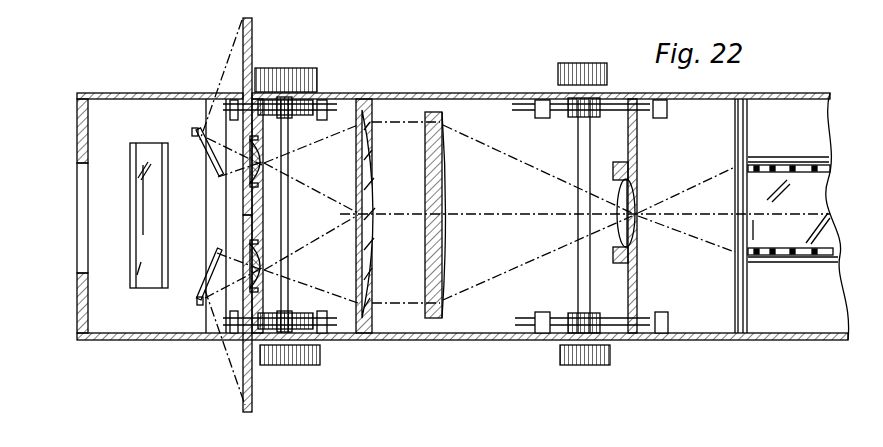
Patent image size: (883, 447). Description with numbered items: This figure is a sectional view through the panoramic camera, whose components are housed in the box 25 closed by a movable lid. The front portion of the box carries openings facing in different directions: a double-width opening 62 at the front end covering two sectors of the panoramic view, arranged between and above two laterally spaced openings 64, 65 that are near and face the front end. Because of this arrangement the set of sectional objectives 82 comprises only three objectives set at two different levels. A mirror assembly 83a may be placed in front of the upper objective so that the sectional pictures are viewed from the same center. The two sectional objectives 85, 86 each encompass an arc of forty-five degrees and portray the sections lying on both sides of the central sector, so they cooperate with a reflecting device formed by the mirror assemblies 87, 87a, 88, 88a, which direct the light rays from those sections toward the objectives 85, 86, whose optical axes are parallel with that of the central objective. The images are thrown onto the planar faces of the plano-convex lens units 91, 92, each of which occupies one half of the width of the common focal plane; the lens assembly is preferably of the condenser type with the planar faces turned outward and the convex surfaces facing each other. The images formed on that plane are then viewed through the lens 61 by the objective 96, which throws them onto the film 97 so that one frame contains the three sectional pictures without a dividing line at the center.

The box 25 is at (110, 340).
The opening 62 is at (82, 223).
The mirror assembly 83a is at (149, 288).
The mirror assembly 88 is at (197, 131).
The mirror assembly 87 is at (200, 298).
The mirror assembly 88a is at (243, 47).
The mirror assembly 87a is at (245, 373).
The opening 64 is at (227, 95).
The opening 65 is at (227, 340).
The set of sectional objectives 82 is at (270, 218).
The sectional objective 86 is at (264, 165).
The sectional objective 85 is at (264, 268).
The plano-convex lens unit 92 is at (372, 177).
The plano-convex lens unit 91 is at (370, 260).
The lens 61 is at (438, 197).
The objective 96 is at (637, 214).
The film 97 is at (806, 216).